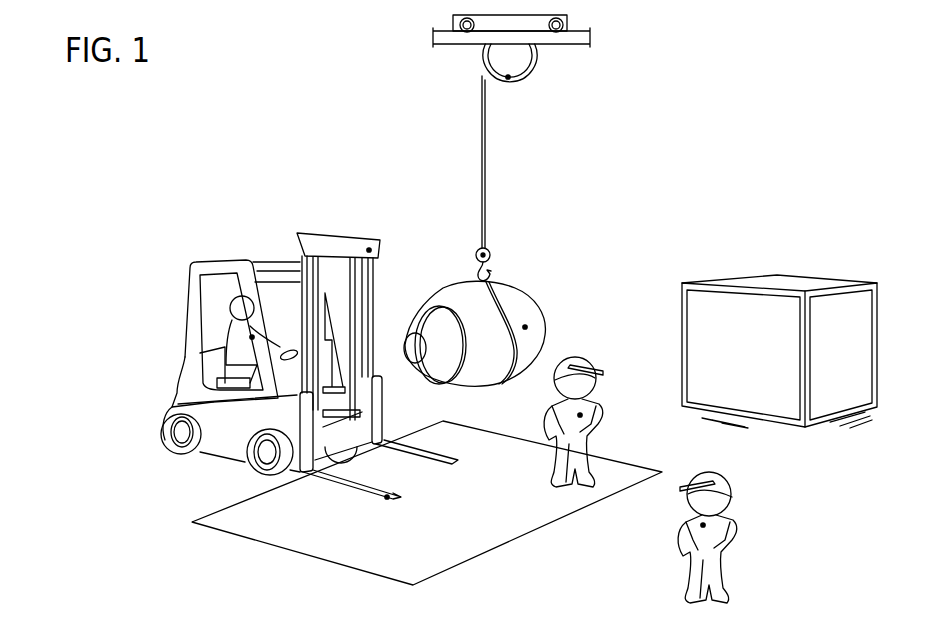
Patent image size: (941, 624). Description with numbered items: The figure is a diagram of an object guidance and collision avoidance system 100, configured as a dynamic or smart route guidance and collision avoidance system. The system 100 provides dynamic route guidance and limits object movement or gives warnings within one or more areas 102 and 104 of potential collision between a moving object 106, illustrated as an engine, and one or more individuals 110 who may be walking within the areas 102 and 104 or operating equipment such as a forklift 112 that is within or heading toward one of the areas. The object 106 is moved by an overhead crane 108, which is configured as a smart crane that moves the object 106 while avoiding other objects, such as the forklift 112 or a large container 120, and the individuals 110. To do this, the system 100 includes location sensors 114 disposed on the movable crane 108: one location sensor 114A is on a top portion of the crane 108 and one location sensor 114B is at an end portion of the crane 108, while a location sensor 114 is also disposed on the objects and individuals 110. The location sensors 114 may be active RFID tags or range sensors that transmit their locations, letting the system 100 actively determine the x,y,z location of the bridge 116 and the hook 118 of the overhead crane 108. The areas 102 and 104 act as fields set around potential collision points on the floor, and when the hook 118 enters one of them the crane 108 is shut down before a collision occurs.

The object guidance and collision avoidance system 100 is at (778, 78).
The area 102 is at (283, 512).
The area 104 is at (338, 577).
The moving object 106 is at (536, 296).
The overhead crane 108 is at (518, 149).
The individuals 110 is at (753, 533).
The forklift 112 is at (190, 288).
The location sensors 114 is at (252, 337).
The location sensor 114A is at (510, 78).
The location sensor 114B is at (490, 255).
The bridge 116 is at (453, 45).
The hook 118 is at (476, 277).
The large container 120 is at (877, 300).